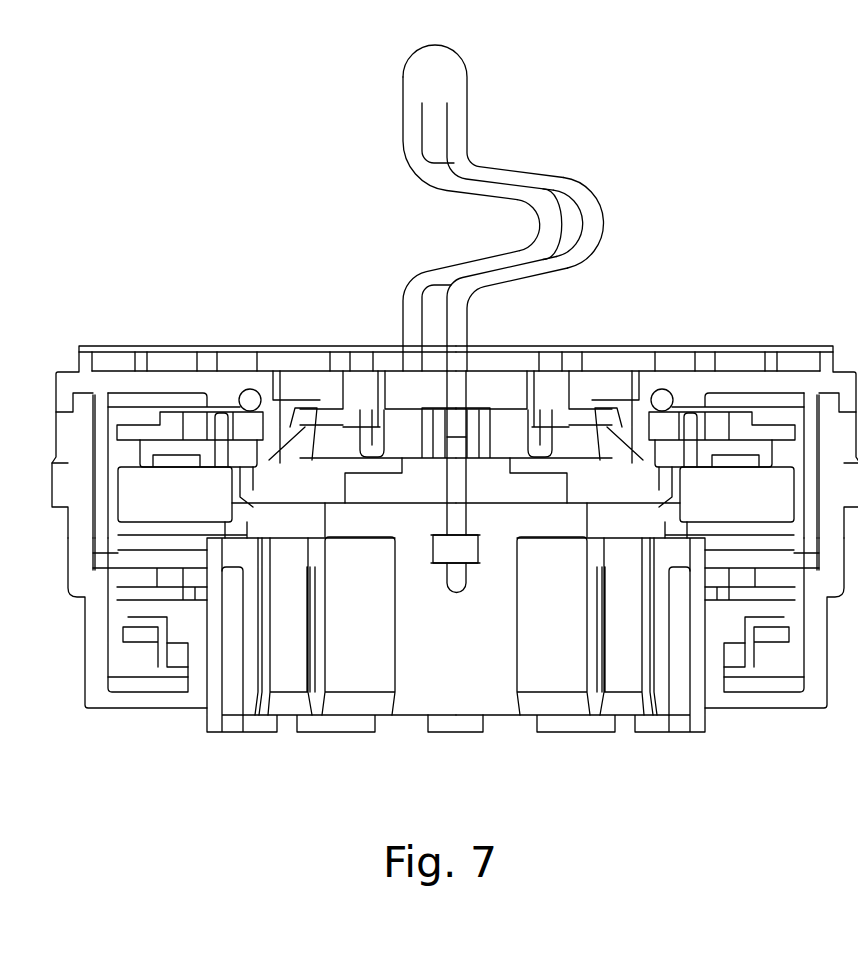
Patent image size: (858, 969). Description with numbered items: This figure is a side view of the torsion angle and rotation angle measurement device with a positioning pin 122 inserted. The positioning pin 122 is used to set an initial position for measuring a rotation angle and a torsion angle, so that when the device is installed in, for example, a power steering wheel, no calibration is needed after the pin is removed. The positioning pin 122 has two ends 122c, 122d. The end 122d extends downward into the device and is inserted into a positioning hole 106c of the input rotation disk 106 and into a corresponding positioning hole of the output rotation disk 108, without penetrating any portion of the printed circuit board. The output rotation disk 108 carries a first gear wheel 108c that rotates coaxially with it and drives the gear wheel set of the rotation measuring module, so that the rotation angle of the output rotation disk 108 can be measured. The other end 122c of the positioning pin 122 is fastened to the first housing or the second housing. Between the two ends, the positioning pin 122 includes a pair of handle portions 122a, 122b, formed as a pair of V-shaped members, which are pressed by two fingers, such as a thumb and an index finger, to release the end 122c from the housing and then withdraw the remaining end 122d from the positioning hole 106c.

The positioning pin 122 is at (501, 409).
The handle portion 122a is at (583, 202).
The handle portion 122b is at (548, 228).
The end of positioning pin 122c is at (413, 320).
The end of positioning pin 122d is at (457, 592).
The input rotation disk 106 is at (455, 410).
The positioning hole 106c is at (470, 437).
The output rotation disk 108 is at (456, 664).
The first gear wheel 108c is at (480, 550).